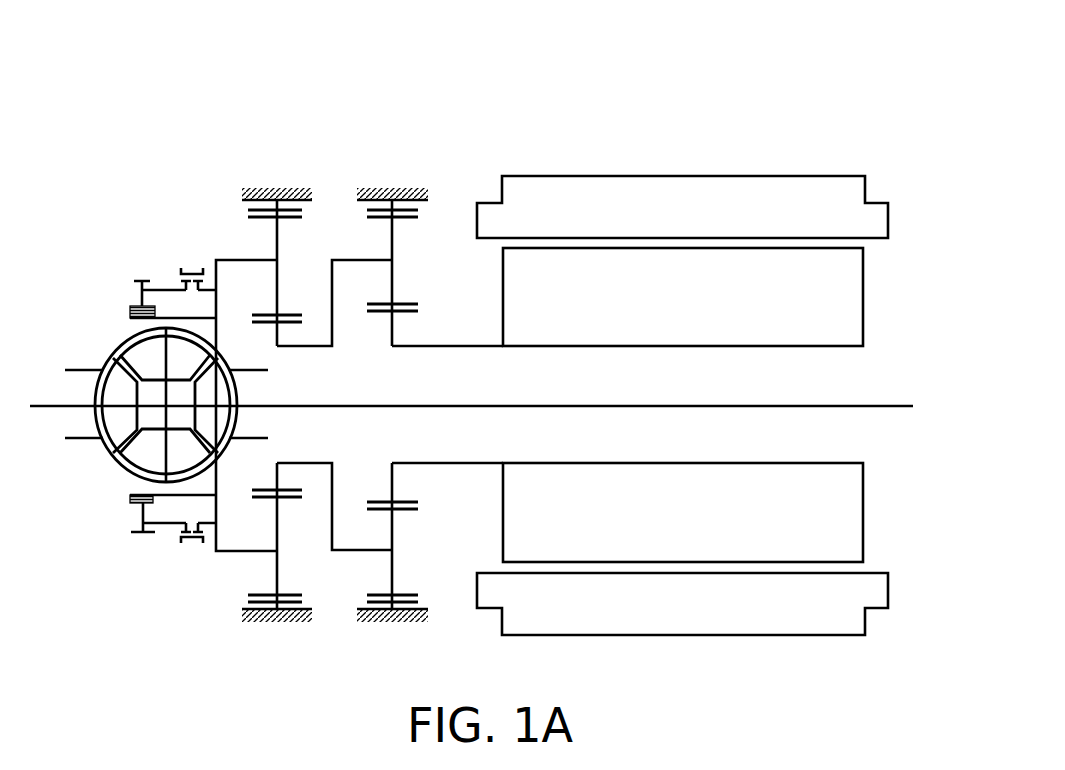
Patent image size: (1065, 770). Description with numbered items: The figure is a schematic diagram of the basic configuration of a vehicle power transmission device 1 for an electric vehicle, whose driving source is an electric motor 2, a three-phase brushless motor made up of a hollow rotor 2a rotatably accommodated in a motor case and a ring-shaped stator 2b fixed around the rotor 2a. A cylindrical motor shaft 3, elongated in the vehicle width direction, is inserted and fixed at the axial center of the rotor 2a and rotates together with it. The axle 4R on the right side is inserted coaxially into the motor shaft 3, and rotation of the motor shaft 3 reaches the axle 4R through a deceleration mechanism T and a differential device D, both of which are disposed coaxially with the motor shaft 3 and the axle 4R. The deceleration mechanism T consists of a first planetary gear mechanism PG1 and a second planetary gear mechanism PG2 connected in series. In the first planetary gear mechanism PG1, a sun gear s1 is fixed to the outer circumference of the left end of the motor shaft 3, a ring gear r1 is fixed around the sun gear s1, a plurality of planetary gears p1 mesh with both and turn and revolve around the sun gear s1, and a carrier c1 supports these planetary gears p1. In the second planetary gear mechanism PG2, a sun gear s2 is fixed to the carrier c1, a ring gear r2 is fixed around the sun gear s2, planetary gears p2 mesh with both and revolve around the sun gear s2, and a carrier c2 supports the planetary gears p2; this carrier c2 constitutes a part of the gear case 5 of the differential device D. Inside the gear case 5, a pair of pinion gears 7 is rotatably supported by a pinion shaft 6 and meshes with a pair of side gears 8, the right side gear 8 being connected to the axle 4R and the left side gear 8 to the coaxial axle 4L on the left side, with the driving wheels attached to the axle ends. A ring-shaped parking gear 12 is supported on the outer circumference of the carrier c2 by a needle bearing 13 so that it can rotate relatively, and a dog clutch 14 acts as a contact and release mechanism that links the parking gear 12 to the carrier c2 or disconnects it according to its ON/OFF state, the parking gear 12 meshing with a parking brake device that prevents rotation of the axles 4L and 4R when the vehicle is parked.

The vehicle power transmission device 1 is at (590, 83).
The electric motor 2 is at (709, 366).
The rotor 2a is at (857, 312).
The stator 2b is at (886, 218).
The motor shaft 3 is at (488, 346).
The axle on the left side 4L is at (55, 407).
The axle on the right side 4R is at (716, 405).
The gear case 5 is at (101, 361).
The pinion shaft 6 is at (148, 457).
The pinion gears 7 is at (212, 356).
The side gears 8 is at (121, 424).
The parking gear 12 is at (142, 280).
The bearing 13 is at (133, 311).
The dog clutch 14 is at (198, 266).
The deceleration mechanism T is at (277, 395).
The differential device D is at (166, 382).
The first planetary gear mechanism PG1 is at (366, 427).
The second planetary gear mechanism PG2 is at (246, 419).
The ring gear r1 is at (369, 212).
The planetary gears p1 is at (394, 240).
The sun gear s1 is at (419, 309).
The carrier c1 is at (313, 347).
The ring gear r2 is at (256, 212).
The planetary gears p2 is at (279, 240).
The sun gear s2 is at (294, 317).
The carrier c2 is at (238, 262).